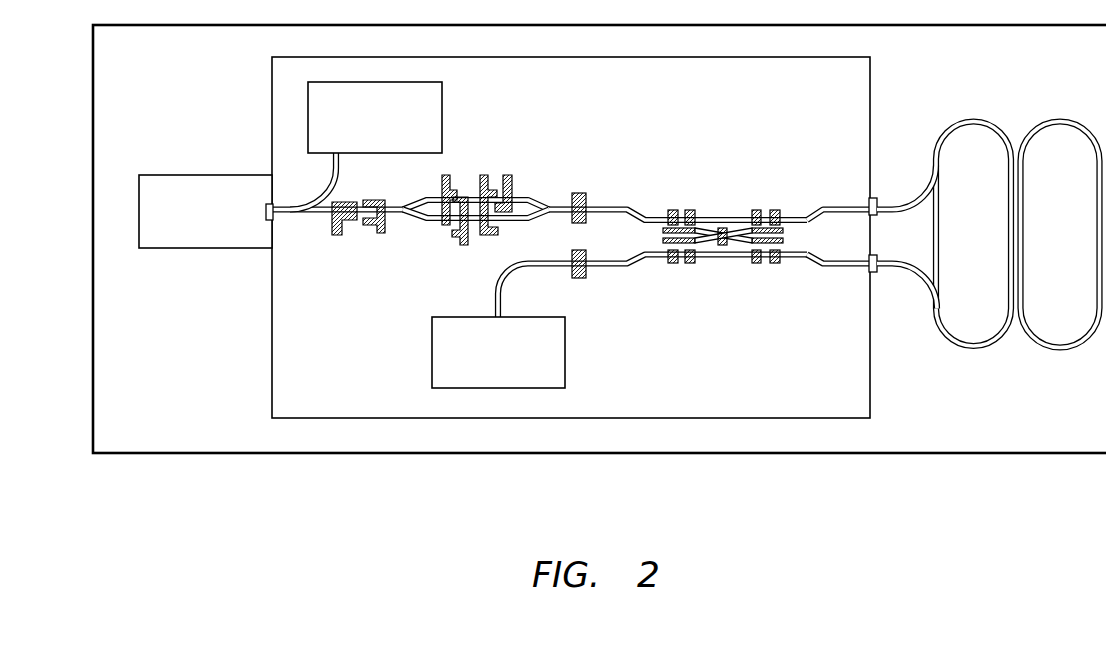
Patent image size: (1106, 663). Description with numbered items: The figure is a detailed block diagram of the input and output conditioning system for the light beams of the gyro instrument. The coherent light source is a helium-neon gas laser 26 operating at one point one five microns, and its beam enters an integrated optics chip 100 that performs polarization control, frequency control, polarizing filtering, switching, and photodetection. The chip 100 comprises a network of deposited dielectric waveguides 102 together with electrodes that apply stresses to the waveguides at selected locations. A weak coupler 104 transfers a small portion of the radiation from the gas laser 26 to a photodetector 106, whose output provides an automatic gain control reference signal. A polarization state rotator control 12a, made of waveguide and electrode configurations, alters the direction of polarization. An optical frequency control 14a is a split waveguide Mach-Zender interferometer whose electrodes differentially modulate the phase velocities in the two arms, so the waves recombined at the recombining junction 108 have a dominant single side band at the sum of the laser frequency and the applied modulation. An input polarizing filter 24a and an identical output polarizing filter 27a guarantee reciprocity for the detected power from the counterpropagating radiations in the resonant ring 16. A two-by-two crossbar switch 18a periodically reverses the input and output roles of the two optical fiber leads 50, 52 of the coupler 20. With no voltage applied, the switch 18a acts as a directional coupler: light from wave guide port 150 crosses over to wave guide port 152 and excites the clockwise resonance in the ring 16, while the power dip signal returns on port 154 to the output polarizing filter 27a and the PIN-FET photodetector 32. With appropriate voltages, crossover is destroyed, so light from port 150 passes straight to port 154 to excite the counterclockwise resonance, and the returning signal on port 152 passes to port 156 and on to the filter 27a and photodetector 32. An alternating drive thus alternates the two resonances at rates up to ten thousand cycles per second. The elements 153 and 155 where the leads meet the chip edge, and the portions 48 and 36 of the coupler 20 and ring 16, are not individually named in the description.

The integrated optics chip 100 is at (614, 414).
The gas laser 26 is at (178, 249).
The deposited dielectric waveguides 102 is at (268, 210).
The weak coupler 104 is at (303, 206).
The photodetector 106 is at (443, 90).
The polarization state rotator control 12a is at (356, 233).
The optical frequency control 14a is at (474, 158).
The recombining junction 108 is at (552, 200).
The input polarizing filter 24a is at (588, 196).
The output polarizing filter 27a is at (580, 279).
The PIN-FET photodetector 32 is at (565, 334).
The wave guide port 150 is at (652, 214).
The wave guide port 152 is at (804, 258).
The wave guide port 154 is at (800, 218).
The wave guide port 156 is at (645, 257).
The crossbar switch 18a is at (728, 200).
The upper waveguide connector 153 is at (903, 170).
The lower waveguide connector 155 is at (878, 273).
The coupler 20 is at (944, 216).
The coupler loop upper portion 48 is at (966, 120).
The optical fiber lead 50 is at (938, 292).
The optical fiber lead 52 is at (929, 170).
The resonant ring 16 is at (1060, 217).
The resonant ring fiber 36 is at (1062, 120).